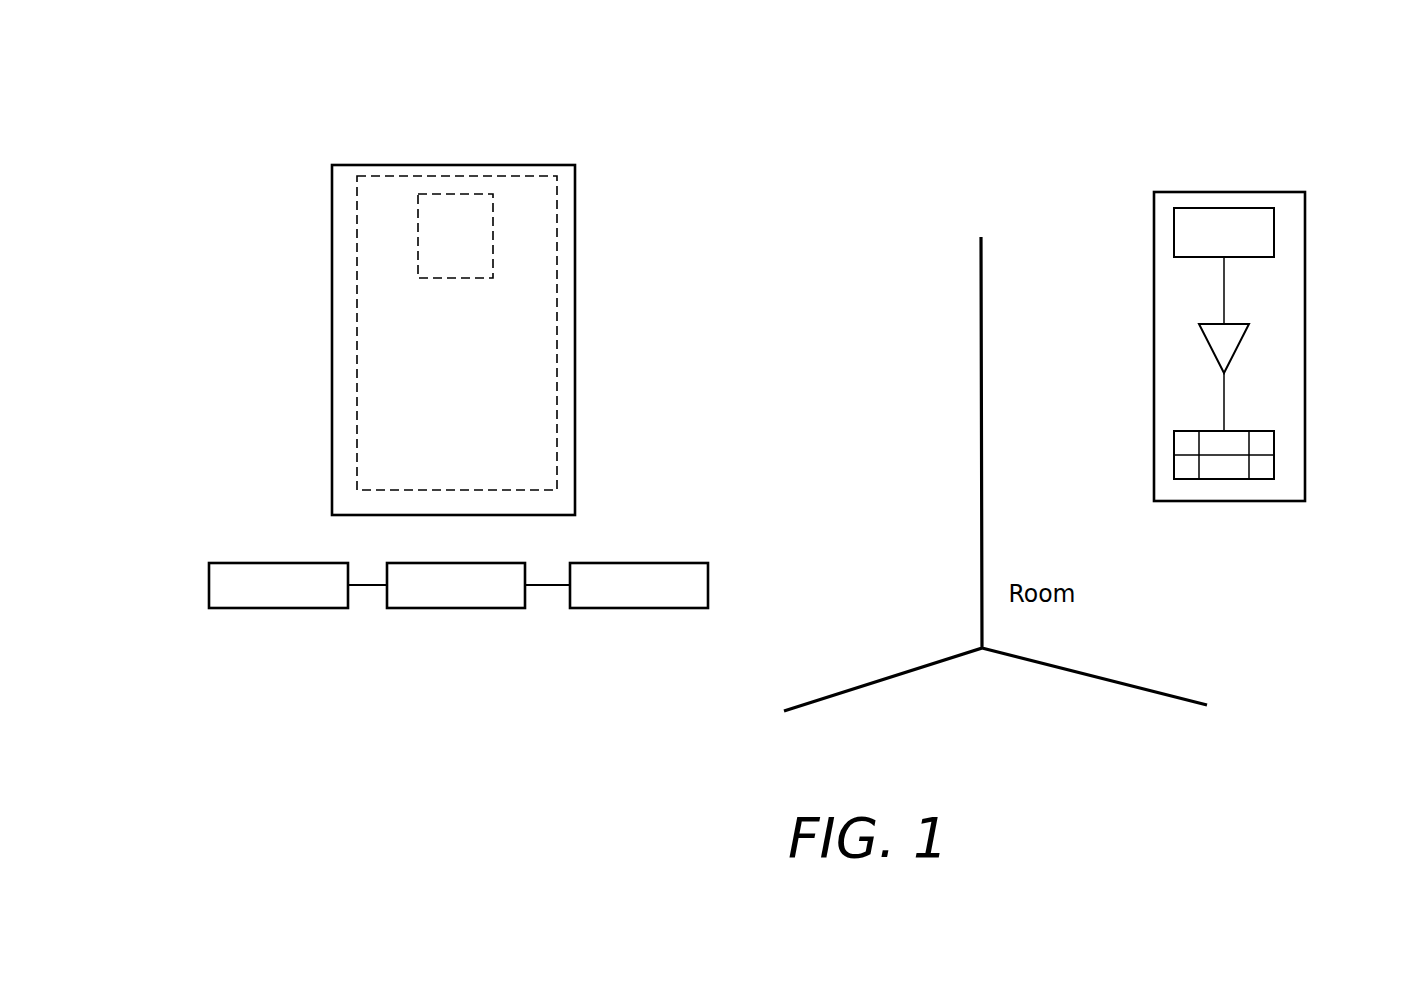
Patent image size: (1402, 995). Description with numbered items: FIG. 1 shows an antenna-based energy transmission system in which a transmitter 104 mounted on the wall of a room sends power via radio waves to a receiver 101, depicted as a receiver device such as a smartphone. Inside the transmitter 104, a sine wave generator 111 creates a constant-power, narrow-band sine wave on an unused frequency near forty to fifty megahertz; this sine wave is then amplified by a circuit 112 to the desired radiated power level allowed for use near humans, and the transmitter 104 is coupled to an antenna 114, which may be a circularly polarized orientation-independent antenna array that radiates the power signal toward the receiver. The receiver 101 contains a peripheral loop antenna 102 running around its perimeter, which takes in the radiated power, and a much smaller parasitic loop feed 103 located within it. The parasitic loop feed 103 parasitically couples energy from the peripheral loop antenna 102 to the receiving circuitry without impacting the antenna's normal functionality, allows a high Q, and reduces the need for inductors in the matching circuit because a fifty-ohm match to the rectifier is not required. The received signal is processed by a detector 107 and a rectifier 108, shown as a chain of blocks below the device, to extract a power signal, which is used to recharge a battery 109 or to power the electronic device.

The receiver 101 is at (537, 161).
The peripheral loop antenna 102 is at (558, 278).
The parasitic loop feed 103 is at (457, 193).
The transmitter 104 is at (1151, 189).
The detector 107 is at (263, 610).
The rectifier 108 is at (462, 610).
The battery 109 is at (643, 610).
The sine wave generator 111 is at (1274, 240).
The amplifier circuit 112 is at (1234, 322).
The antenna 114 is at (1274, 443).